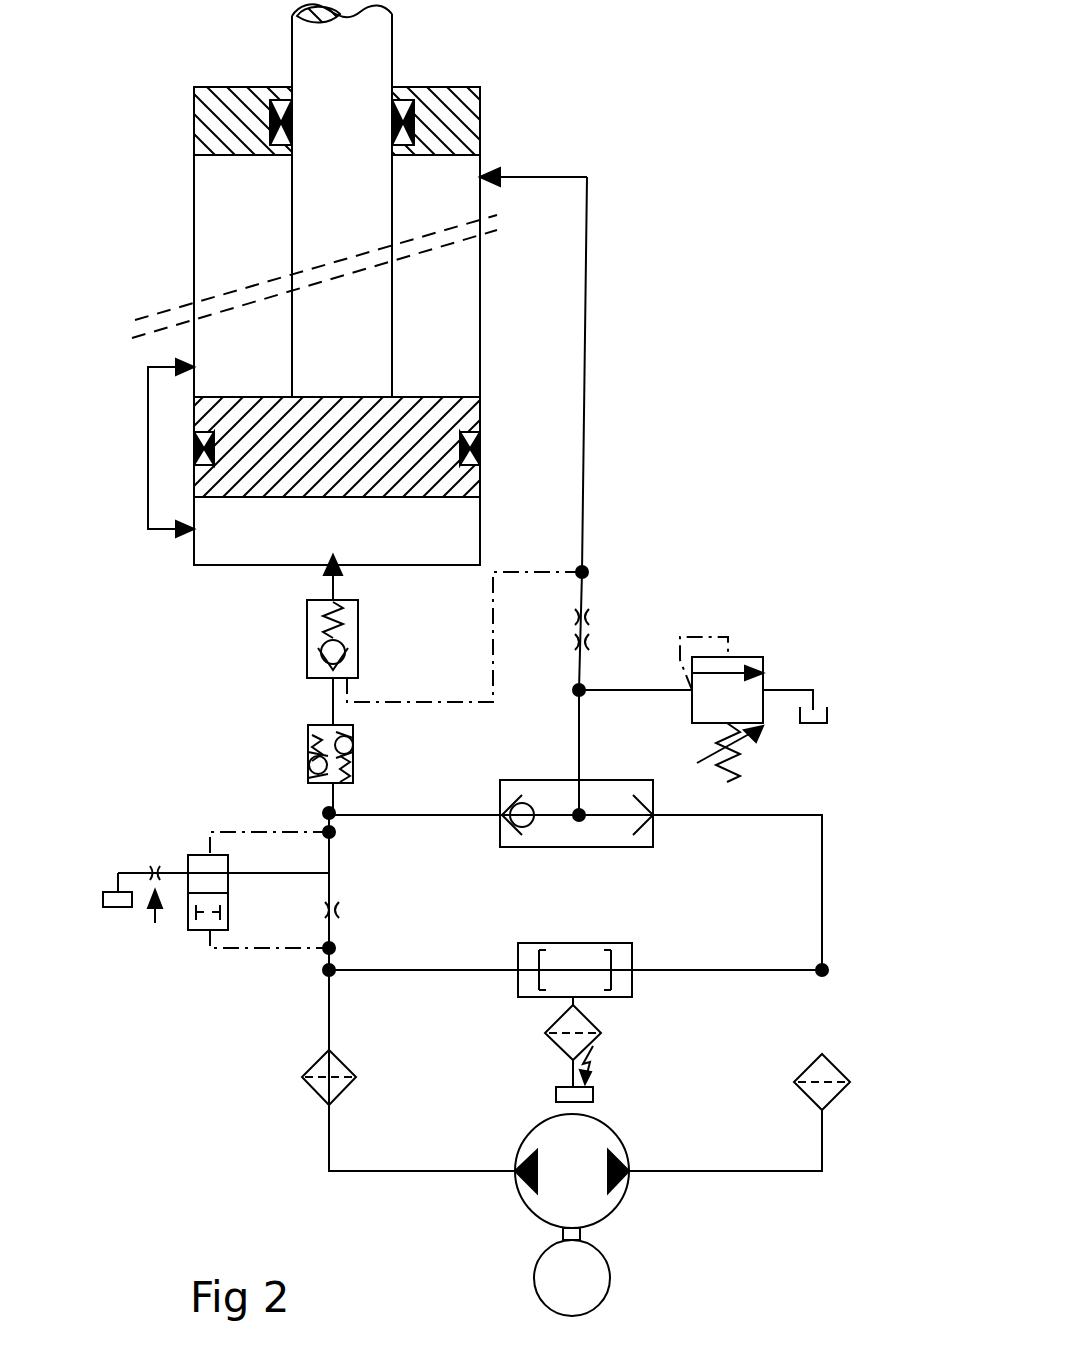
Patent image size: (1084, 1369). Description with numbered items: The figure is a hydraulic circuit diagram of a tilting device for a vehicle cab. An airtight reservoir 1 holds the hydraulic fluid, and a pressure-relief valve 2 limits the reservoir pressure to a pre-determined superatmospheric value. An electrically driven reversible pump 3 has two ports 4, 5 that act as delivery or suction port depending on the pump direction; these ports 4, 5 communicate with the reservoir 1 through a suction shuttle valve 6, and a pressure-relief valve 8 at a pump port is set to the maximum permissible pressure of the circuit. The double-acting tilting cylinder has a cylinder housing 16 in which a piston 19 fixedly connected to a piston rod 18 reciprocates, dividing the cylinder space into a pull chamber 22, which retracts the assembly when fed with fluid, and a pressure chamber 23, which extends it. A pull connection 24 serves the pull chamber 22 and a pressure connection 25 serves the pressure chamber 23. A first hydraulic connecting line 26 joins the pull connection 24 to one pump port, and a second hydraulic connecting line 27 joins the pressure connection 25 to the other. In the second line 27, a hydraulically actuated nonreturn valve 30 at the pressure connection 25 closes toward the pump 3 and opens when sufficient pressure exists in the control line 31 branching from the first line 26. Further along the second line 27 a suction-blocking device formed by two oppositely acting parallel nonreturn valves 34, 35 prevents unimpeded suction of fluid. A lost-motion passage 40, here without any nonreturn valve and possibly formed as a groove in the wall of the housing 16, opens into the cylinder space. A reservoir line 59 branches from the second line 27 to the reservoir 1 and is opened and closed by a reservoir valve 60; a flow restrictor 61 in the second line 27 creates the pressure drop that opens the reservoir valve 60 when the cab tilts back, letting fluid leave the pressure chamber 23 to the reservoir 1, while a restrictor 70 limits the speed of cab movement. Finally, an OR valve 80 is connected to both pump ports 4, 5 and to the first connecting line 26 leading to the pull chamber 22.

The reservoir 1 is at (103, 900).
The pressure-relief valve 2 is at (600, 1052).
The pump 3 is at (498, 1210).
The pump port 4 is at (513, 1165).
The pump port 5 is at (630, 1165).
The suction shuttle valve 6 is at (622, 943).
The pressure-relief valve 8 is at (773, 630).
The cylinder housing 16 is at (482, 330).
The piston rod 18 is at (380, 38).
The piston 19 is at (442, 425).
The pull chamber 22 is at (462, 278).
The pressure chamber 23 is at (462, 520).
The pull connection 24 is at (484, 177).
The pressure connection 25 is at (333, 572).
The first hydraulic connecting line 26 is at (587, 340).
The second hydraulic connecting line 27 is at (329, 1018).
The hydraulically actuated nonreturn valve 30 is at (373, 642).
The control line 31 is at (465, 703).
The nonreturn valve 34 is at (362, 763).
The nonreturn valve 35 is at (300, 750).
The lost-motion passage 40 is at (148, 453).
The reservoir line 59 is at (273, 873).
The reservoir valve 60 is at (180, 837).
The flow restrictor 61 is at (347, 910).
The restrictor 70 is at (153, 949).
The OR valve 80 is at (545, 855).